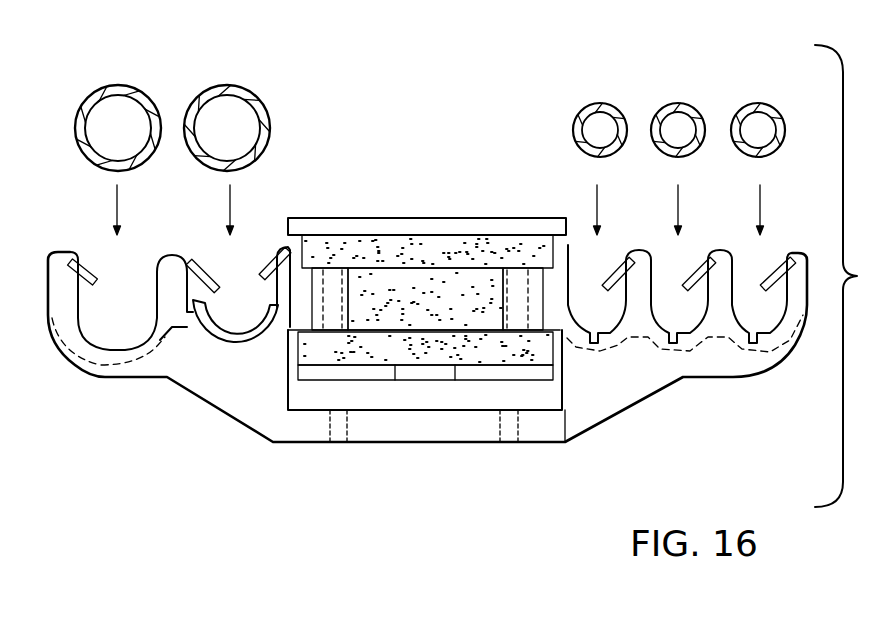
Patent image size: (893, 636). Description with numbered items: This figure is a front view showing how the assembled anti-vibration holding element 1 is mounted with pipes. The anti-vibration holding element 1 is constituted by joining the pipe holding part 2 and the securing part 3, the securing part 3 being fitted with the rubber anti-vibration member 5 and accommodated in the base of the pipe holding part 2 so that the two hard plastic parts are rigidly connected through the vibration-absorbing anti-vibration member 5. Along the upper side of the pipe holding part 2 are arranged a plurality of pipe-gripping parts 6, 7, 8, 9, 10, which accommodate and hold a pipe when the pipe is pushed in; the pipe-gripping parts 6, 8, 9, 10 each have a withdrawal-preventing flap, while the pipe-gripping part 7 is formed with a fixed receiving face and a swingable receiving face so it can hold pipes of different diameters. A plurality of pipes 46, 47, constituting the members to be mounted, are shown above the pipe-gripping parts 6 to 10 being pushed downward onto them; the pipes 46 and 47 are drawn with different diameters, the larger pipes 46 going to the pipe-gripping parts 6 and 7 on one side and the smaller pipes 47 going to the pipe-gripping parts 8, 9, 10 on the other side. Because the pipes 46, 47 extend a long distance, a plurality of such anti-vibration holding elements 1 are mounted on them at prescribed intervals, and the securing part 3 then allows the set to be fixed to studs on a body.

The anti-vibration holding element 1 is at (457, 178).
The pipe holding part 2 is at (659, 409).
The securing part 3 is at (377, 215).
The anti-vibration member 5 is at (388, 311).
The pipe gripping part 6 is at (116, 280).
The pipe gripping part 7 is at (232, 285).
The pipe gripping part 8 is at (594, 277).
The pipe gripping part 9 is at (673, 277).
The pipe gripping part 10 is at (753, 277).
The pipe 46 is at (190, 100).
The pipe 47 is at (740, 110).